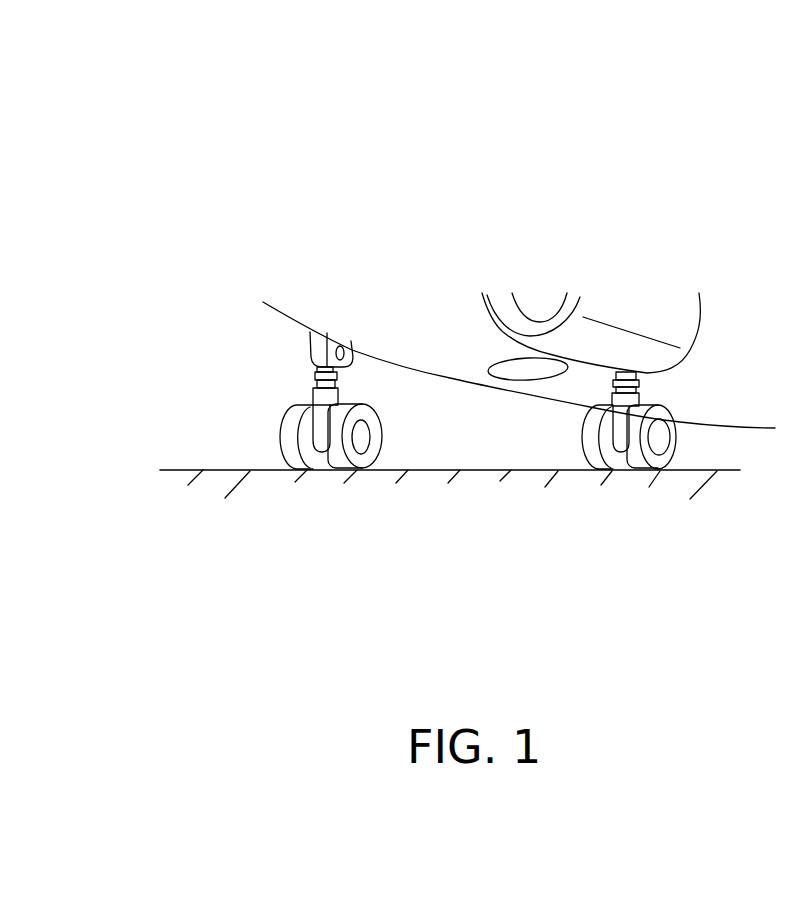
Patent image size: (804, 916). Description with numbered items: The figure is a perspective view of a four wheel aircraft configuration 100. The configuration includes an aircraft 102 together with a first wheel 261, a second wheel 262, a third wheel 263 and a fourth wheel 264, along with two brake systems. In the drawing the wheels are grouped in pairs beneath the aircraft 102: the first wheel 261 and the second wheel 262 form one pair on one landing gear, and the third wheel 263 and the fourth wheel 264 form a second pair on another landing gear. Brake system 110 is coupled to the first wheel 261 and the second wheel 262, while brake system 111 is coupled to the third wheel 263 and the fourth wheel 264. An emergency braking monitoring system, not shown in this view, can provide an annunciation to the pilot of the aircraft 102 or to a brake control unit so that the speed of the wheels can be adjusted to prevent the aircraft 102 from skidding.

The four wheel aircraft configuration 100 is at (142, 130).
The aircraft 102 is at (417, 367).
The brake system 110 is at (325, 455).
The brake system 111 is at (622, 458).
The first wheel 261 is at (288, 470).
The second wheel 262 is at (368, 470).
The third wheel 263 is at (585, 472).
The fourth wheel 264 is at (663, 470).